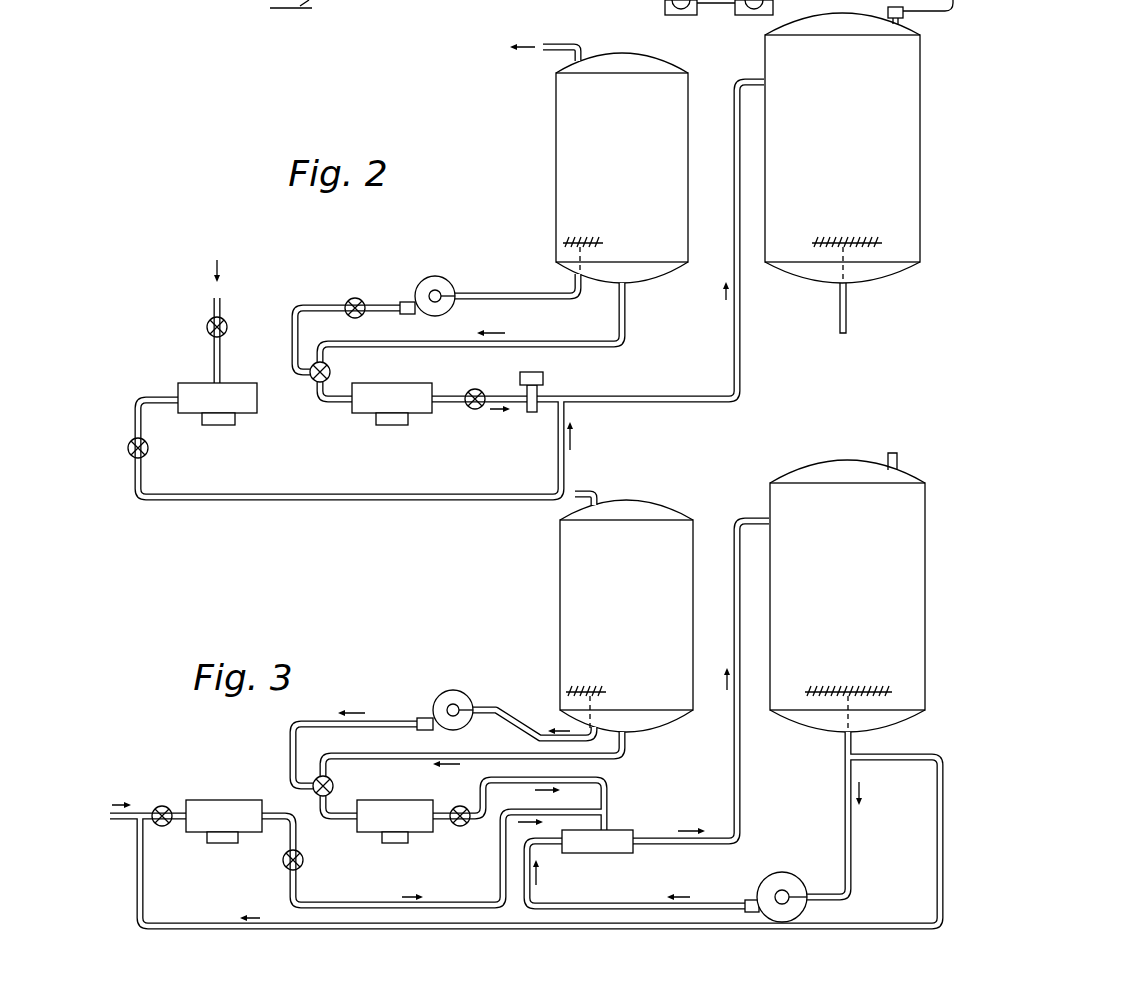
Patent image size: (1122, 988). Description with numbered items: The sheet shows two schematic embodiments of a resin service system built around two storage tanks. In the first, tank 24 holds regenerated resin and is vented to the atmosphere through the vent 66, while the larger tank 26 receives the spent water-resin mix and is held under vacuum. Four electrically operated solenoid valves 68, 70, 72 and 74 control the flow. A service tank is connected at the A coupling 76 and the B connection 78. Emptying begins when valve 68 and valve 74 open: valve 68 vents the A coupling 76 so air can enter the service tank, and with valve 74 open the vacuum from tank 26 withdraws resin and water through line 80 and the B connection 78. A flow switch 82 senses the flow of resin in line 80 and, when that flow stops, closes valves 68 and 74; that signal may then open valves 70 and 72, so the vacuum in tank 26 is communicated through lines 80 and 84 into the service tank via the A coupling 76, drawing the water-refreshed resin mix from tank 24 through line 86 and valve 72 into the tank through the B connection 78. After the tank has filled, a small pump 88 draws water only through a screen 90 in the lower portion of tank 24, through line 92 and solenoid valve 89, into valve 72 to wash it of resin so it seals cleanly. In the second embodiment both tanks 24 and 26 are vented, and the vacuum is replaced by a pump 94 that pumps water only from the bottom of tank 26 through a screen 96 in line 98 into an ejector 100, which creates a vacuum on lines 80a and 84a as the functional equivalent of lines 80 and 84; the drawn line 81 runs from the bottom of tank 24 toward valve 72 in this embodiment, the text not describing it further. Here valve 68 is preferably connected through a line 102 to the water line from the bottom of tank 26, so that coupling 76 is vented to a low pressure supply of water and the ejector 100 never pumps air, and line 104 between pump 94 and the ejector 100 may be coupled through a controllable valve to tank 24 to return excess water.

In FIG. 2, the tank 24 is at (556, 122).
In FIG. 3, the tank 24 is at (560, 603).
In FIG. 2, the tank 26 is at (920, 88).
In FIG. 3, the tank 26 is at (925, 556).
In FIG. 2, the vent 66 is at (556, 43).
In FIG. 3, the vent 66 is at (580, 490).
In FIG. 2, the solenoid valve 68 is at (210, 320).
In FIG. 3, the solenoid valve 68 is at (165, 806).
In FIG. 2, the solenoid valve 70 is at (148, 452).
In FIG. 3, the solenoid valve 70 is at (303, 862).
In FIG. 2, the solenoid valve 72 is at (330, 372).
In FIG. 3, the solenoid valve 72 is at (333, 786).
In FIG. 2, the solenoid valve 74 is at (470, 410).
In FIG. 3, the solenoid valve 74 is at (460, 826).
In FIG. 2, the A coupling 76 is at (192, 383).
In FIG. 3, the A coupling 76 is at (232, 800).
In FIG. 2, the B connection 78 is at (428, 383).
In FIG. 3, the B connection 78 is at (395, 800).
In FIG. 2, the line 80 is at (500, 395).
In FIG. 3, the line 80a is at (610, 800).
In FIG. 3, the conduit 81 is at (630, 757).
In FIG. 2, the flow switch 82 is at (545, 380).
In FIG. 2, the line 84 is at (252, 503).
In FIG. 3, the line 84a is at (340, 901).
In FIG. 2, the line 86 is at (626, 322).
In FIG. 2, the pump 88 is at (438, 276).
In FIG. 3, the pump 88 is at (455, 690).
In FIG. 2, the solenoid valve 89 is at (360, 299).
In FIG. 2, the screen 90 is at (592, 233).
In FIG. 3, the screen 90 is at (600, 690).
In FIG. 2, the line 92 is at (320, 304).
In FIG. 3, the line 92 is at (388, 721).
In FIG. 3, the pump 94 is at (792, 872).
In FIG. 3, the screen 96 is at (858, 690).
In FIG. 3, the line 98 is at (852, 824).
In FIG. 3, the ejector 100 is at (610, 853).
In FIG. 3, the line 102 is at (937, 890).
In FIG. 3, the line 104 is at (712, 904).